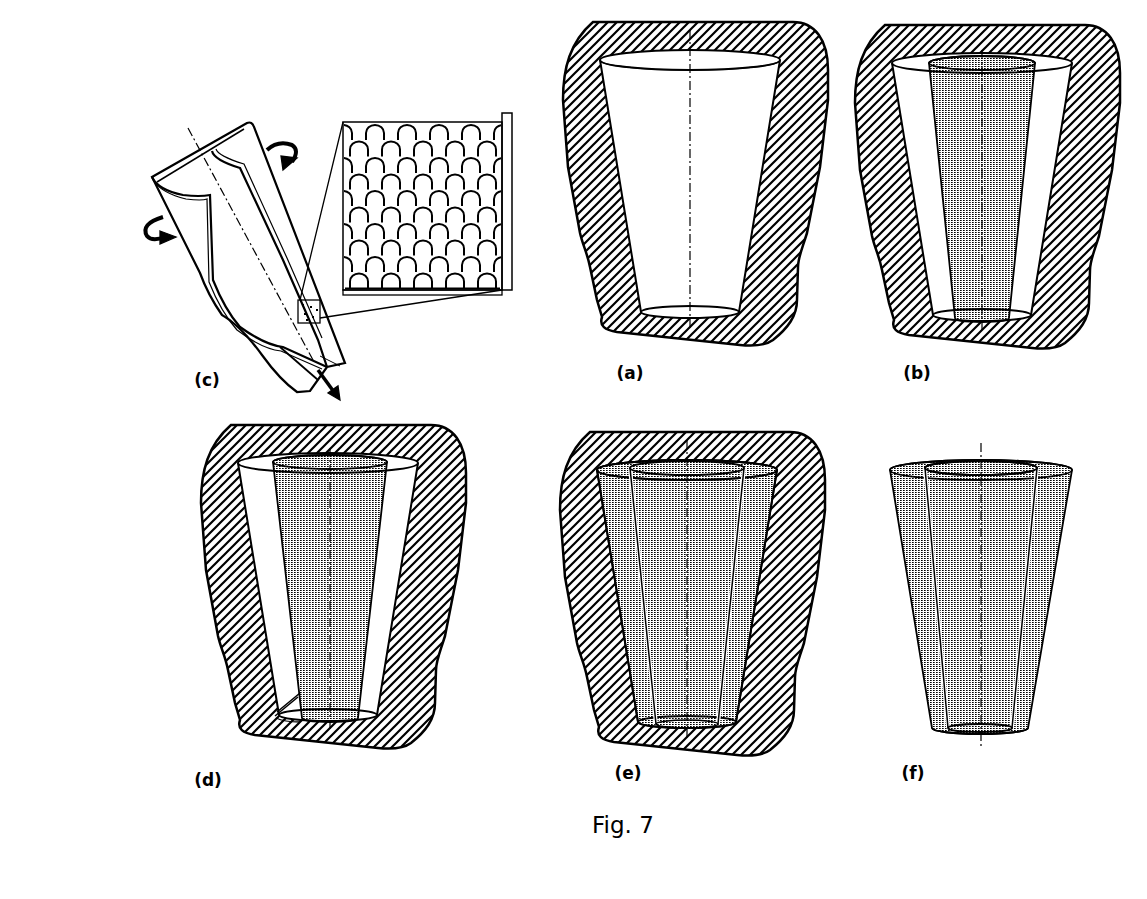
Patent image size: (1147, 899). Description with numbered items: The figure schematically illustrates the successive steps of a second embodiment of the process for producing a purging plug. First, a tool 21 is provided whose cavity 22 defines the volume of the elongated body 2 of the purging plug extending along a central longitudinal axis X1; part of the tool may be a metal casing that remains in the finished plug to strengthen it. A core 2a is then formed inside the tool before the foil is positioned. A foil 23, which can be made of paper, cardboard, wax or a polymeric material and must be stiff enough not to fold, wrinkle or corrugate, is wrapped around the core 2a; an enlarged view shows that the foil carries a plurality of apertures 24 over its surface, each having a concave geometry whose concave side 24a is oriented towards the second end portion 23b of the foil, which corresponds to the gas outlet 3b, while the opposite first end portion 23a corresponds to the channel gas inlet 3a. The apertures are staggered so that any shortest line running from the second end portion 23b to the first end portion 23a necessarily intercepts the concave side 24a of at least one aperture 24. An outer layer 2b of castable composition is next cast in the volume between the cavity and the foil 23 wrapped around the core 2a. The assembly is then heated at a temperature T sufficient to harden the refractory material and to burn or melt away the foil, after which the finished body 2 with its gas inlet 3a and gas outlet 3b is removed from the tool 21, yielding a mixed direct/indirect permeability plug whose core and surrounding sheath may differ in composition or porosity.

The tool 21 is at (785, 332).
The cavity 22 is at (713, 62).
The core 2a is at (1008, 55).
The outer layer 2b is at (770, 447).
The elongated body 2 is at (1053, 607).
The channel gas inlet 3a is at (1040, 463).
The gas outlet 3b is at (1007, 730).
The foil 23 is at (192, 280).
The first end portion 23a is at (182, 163).
The second end portion 23b is at (330, 366).
The apertures 24 is at (502, 293).
The concave side 24a is at (485, 290).
The central longitudinal axis X1 is at (672, 403).
The temperature T is at (635, 414).